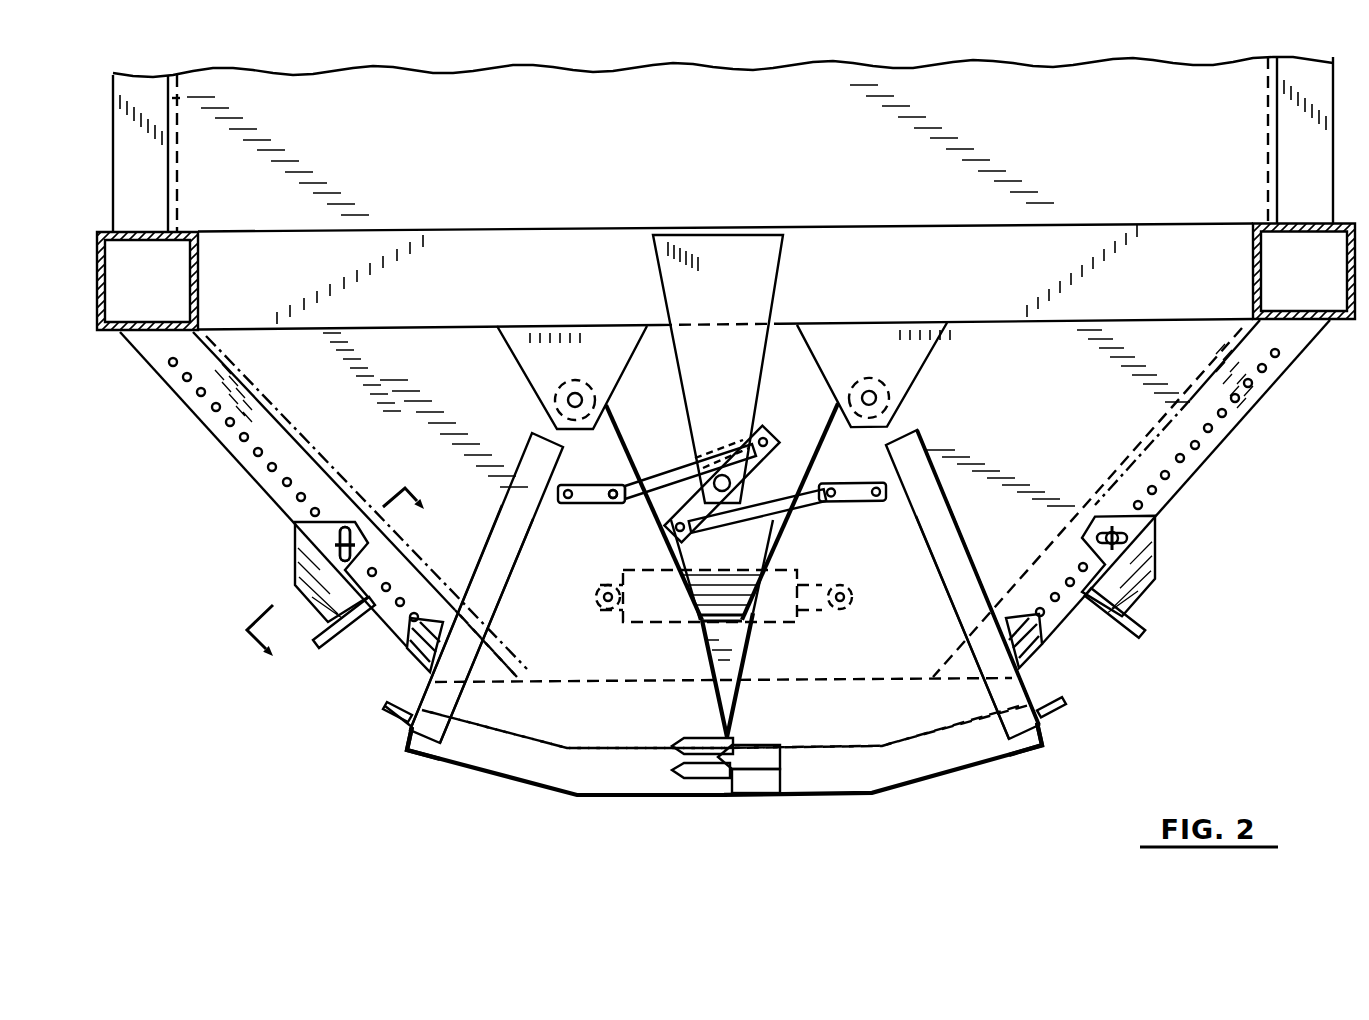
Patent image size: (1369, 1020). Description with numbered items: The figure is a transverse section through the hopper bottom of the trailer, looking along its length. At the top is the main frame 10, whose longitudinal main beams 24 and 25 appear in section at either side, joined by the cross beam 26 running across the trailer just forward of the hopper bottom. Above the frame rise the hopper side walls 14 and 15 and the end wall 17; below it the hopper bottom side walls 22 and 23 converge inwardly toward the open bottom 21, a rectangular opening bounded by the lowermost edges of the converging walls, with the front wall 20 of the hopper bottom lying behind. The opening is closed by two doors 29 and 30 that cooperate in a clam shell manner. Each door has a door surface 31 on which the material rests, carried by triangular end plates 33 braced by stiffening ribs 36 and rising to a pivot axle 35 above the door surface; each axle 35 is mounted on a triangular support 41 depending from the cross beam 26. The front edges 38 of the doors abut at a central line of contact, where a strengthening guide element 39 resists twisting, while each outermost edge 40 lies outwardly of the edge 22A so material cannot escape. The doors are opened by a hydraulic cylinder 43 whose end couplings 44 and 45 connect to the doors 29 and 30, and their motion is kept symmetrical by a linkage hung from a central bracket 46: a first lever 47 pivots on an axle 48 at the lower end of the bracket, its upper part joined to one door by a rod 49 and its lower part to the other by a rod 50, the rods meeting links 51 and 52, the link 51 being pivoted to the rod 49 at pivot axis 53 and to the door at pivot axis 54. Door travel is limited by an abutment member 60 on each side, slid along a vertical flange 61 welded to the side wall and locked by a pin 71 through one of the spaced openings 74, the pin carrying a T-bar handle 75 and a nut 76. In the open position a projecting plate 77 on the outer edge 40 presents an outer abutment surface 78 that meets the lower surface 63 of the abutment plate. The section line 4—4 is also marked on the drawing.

The section line 4- 4 is at (343, 584).
The main frame 10 is at (472, 226).
The side wall 14 is at (182, 153).
The side wall 15 is at (1262, 122).
The end wall 17 is at (708, 128).
The end wall 20 is at (1000, 332).
The open bottom 21 is at (790, 682).
The side wall 22 is at (321, 455).
The edge 22A is at (530, 675).
The side wall 23 is at (1124, 446).
The longitudinal main beam 24 is at (104, 340).
The longitudinal main beam 25 is at (1317, 325).
The cross beam 26 is at (880, 247).
The door 29 is at (623, 808).
The door 30 is at (903, 800).
The door surface 31 is at (545, 730).
The triangular end plate 33 is at (530, 560).
The pivot axle 35 is at (560, 398).
The stiffening ribs 36 is at (490, 578).
The front edge 38 is at (727, 795).
The center clamp plate 39 is at (765, 768).
The outermost edge 40 is at (405, 748).
The triangular support 41 is at (540, 345).
The hydraulic cylinder 43 is at (738, 573).
The end coupling 44 is at (598, 598).
The end coupling 45 is at (852, 598).
The bracket 46 is at (738, 252).
The first lever 47 is at (782, 448).
The axle 48 is at (735, 482).
The rod 49 is at (672, 470).
The rod 50 is at (779, 511).
The link 51 is at (600, 497).
The link 52 is at (865, 500).
The pivot axis 53 is at (610, 500).
The pivot axis 54 is at (593, 500).
The abutment member 60 is at (283, 572).
The flange 61 is at (225, 455).
The lower surface 63 is at (350, 630).
The pin 71 is at (328, 545).
The openings 74 is at (199, 392).
The T-bar handle 75 is at (345, 544).
The nut 76 is at (1127, 540).
The projecting plate 77 is at (392, 718).
The outer abutment surface 78 is at (385, 705).